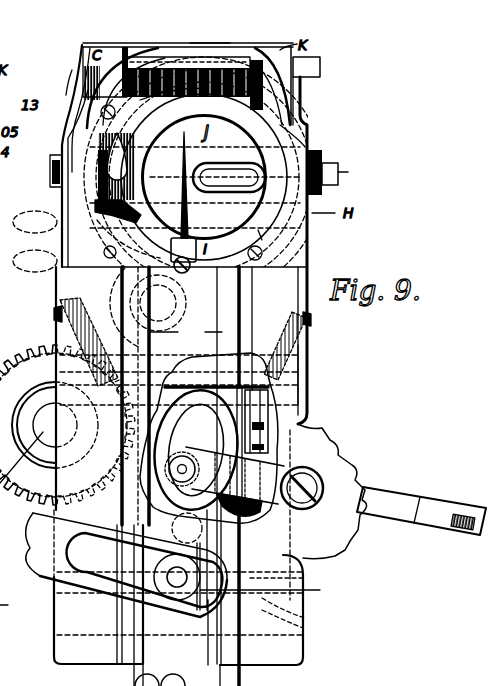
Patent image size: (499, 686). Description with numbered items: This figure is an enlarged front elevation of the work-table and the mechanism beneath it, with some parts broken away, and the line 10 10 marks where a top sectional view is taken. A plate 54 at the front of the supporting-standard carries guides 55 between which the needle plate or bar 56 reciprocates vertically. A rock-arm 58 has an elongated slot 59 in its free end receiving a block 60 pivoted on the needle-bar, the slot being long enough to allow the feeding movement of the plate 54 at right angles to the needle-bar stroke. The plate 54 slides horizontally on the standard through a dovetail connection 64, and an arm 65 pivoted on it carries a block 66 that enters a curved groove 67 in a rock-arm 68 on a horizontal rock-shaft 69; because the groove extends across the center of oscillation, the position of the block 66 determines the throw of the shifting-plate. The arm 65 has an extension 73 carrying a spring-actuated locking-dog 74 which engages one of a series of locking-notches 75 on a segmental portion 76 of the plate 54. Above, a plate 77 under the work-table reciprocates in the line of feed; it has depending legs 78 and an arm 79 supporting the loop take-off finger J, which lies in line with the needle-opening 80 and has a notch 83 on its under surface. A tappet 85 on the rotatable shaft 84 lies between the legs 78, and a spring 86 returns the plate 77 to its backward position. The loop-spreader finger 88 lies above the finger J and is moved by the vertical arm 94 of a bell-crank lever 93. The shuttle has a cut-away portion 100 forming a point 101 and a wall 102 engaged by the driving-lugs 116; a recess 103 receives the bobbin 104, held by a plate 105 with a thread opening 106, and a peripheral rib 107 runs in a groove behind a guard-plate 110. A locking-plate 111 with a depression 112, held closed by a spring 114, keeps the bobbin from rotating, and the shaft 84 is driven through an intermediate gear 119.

The section line 10 is at (52, 173).
The plate 54 is at (57, 315).
The guides 55 is at (186, 332).
The needle plate or bar 56 is at (150, 300).
The rock-arm 58 is at (14, 559).
The elongated slot 59 is at (95, 562).
The block 60 is at (177, 556).
The dovetail connection 64 is at (310, 378).
The arm 65 is at (267, 480).
The block 66 is at (63, 425).
The curved groove 67 is at (196, 450).
The rock-arm 68 is at (158, 485).
The rock-shaft 69 is at (318, 555).
The extension 73 is at (390, 493).
The spring-actuated locking-dog 74 is at (413, 502).
The locking-notches 75 is at (365, 470).
The segmental portion 76 is at (307, 499).
The plate 77 is at (337, 66).
The depending legs 78 is at (302, 105).
The arm 79 is at (305, 85).
The needle-opening 80 is at (195, 36).
The notch 83 is at (222, 177).
The rotatable shaft 84 is at (35, 222).
The cam-arm or tappet 85 is at (35, 261).
The spring 86 is at (70, 95).
The horizontal finger 88 is at (188, 76).
The bell-crank lever 93 is at (262, 445).
The vertical arm 94 is at (270, 387).
The cut-away portion 100 is at (97, 180).
The point 101 is at (97, 220).
The wall or surface 102 is at (106, 150).
The recess 103 is at (258, 230).
The bobbin 104 is at (174, 183).
The plate 105 is at (200, 242).
The opening 106 is at (103, 116).
The rib 107 is at (144, 97).
The guard-plate 110 is at (265, 255).
The locking-plate 111 is at (303, 147).
The depression 112 is at (250, 160).
The spring 114 is at (322, 168).
The driving-lugs 116 is at (82, 136).
The intermediate gear 119 is at (83, 293).